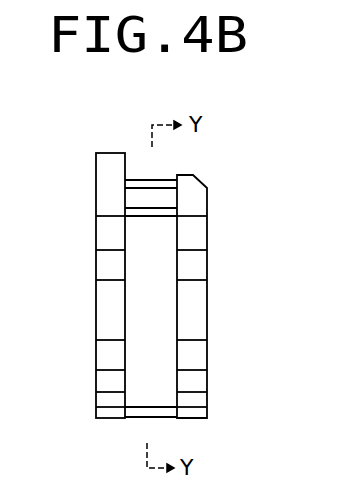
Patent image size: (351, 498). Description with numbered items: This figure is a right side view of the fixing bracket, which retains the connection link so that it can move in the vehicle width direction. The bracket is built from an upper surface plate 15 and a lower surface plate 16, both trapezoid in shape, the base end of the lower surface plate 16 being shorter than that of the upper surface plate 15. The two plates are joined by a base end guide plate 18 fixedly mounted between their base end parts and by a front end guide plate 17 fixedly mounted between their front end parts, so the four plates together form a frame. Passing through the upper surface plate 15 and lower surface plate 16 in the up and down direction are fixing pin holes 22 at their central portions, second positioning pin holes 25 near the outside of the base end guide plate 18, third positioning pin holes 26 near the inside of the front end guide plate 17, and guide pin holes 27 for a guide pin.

The upper surface plate 15 is at (110, 268).
The lower surface plate 16 is at (190, 268).
The front end guide plate 17 is at (137, 418).
The base end guide plate 18 is at (147, 197).
The fixing pin hole 22 is at (113, 340).
The second positioning pin hole 25 is at (113, 250).
The third positioning pin hole 26 is at (113, 407).
The guide pin hole 27 is at (113, 392).